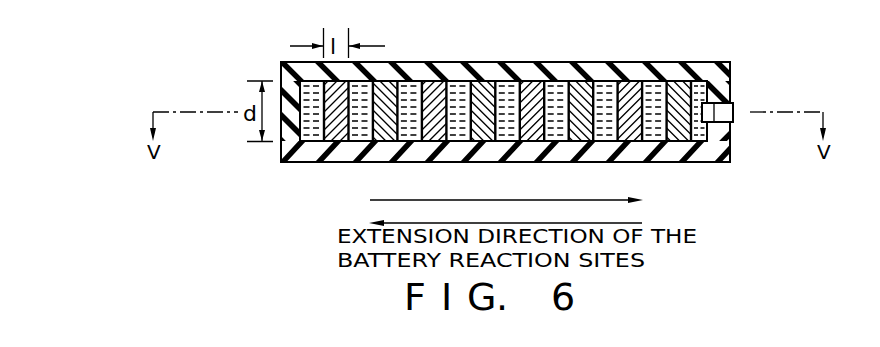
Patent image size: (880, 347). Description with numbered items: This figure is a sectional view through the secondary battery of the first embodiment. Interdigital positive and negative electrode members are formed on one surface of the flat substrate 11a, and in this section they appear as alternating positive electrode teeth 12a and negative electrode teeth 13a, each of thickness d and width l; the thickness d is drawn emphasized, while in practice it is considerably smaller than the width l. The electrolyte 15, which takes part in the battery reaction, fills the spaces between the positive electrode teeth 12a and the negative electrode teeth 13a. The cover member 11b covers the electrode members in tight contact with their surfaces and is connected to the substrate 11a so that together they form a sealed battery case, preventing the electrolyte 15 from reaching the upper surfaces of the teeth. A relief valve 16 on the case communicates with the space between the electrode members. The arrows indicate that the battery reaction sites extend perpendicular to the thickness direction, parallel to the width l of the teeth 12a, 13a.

The flat substrate 11a is at (723, 152).
The cover member 11b is at (700, 68).
The positive electrode tooth 12a is at (435, 88).
The negative electrode tooth 13a is at (385, 87).
The electrolyte 15 is at (560, 83).
The relief valve 16 is at (728, 110).